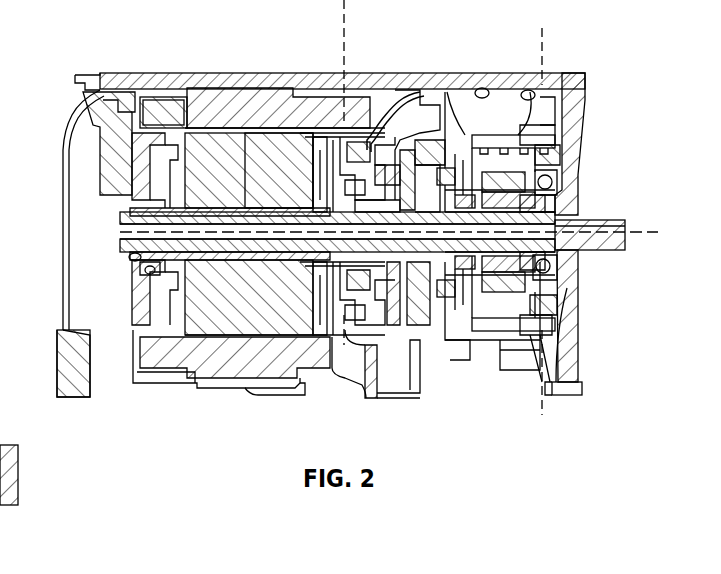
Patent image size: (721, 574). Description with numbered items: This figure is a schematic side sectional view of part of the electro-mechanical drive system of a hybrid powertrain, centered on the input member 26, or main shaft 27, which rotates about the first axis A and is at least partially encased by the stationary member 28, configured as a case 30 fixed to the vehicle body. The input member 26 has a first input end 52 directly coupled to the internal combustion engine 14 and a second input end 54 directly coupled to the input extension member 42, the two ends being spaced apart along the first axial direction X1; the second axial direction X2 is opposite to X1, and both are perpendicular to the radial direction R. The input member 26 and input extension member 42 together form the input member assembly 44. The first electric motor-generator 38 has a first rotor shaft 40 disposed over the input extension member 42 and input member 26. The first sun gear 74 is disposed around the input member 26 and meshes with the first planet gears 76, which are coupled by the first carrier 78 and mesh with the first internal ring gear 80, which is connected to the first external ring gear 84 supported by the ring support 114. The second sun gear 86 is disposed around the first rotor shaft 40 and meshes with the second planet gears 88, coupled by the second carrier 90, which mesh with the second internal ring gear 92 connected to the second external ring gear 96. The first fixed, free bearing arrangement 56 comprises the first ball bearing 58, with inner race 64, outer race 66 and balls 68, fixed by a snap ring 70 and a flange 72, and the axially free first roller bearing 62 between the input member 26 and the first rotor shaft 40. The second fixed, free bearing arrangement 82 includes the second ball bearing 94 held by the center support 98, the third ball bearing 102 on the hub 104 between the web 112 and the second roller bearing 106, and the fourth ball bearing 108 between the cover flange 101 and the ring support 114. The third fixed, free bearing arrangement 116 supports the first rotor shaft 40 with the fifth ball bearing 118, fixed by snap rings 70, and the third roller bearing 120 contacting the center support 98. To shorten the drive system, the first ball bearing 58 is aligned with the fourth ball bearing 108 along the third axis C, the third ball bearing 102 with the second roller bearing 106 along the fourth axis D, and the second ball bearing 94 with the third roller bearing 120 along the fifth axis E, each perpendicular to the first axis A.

The internal combustion engine 14 is at (0, 462).
The input member 26 is at (612, 238).
The main shaft 27 is at (615, 262).
The stationary member 28 is at (578, 392).
The case 30 is at (565, 395).
The first electric motor-generator 38 is at (190, 88).
The first rotor shaft 40 is at (217, 170).
The input extension member 42 is at (250, 180).
The input member assembly 44 is at (630, 280).
The first input end 52 is at (620, 250).
The second input end 54 is at (298, 208).
The first fixed, free bearing arrangement 56 is at (552, 200).
The first ball bearing 58 is at (562, 288).
The first roller bearing 62 is at (335, 157).
The inner race 64 is at (562, 262).
The outer race 66 is at (562, 212).
The balls 68 is at (562, 183).
The snap ring 70 is at (500, 170).
The flange 72 is at (562, 163).
The first sun gear 74 is at (518, 300).
The first planet gears 76 is at (520, 370).
The first carrier 78 is at (572, 132).
The first internal ring gear 80 is at (470, 300).
The second fixed, free bearing arrangement 82 is at (355, 152).
The first external ring gear 84 is at (560, 120).
The second sun gear 86 is at (405, 310).
The second planet gears 88 is at (358, 338).
The second carrier 90 is at (372, 170).
The second internal ring gear 92 is at (390, 165).
The second ball bearing 94 is at (300, 320).
The second external ring gear 96 is at (412, 150).
The center support 98 is at (300, 396).
The cover flange 101 is at (565, 292).
The third ball bearing 102 is at (440, 300).
The hub 104 is at (485, 182).
The second roller bearing 106 is at (430, 395).
The fourth ball bearing 108 is at (565, 302).
The web 112 is at (462, 350).
The ring support 114 is at (570, 332).
The third fixed, free bearing arrangement 116 is at (127, 193).
The fifth ball bearing 118 is at (140, 270).
The third roller bearing 120 is at (300, 290).
The first axis A is at (645, 232).
The third axis C is at (545, 55).
The fourth axis D is at (452, 68).
The fifth axis E is at (344, 35).
The radial direction R is at (44, 232).
The first axial direction X1 is at (40, 237).
The second axial direction X2 is at (75, 248).